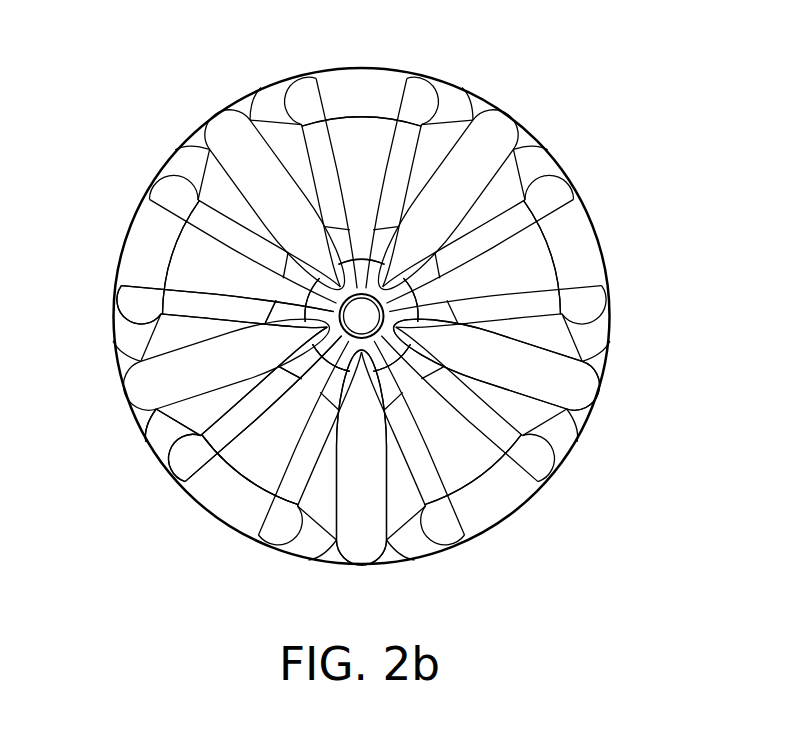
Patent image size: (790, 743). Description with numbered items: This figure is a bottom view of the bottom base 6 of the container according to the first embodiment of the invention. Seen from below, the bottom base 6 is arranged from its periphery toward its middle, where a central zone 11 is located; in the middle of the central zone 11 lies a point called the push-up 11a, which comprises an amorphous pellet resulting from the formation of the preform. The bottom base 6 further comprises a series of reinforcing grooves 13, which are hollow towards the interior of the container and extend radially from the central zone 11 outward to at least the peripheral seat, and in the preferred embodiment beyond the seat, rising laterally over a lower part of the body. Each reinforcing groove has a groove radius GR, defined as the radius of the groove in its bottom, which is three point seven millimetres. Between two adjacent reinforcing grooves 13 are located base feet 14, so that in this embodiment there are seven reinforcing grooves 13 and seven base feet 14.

The bottom base 6 is at (462, 95).
The central zone 11 is at (393, 305).
The push-up 11a is at (364, 306).
The reinforcing grooves 13 is at (585, 387).
The base feet 14 is at (132, 250).
The groove radius GR is at (139, 390).